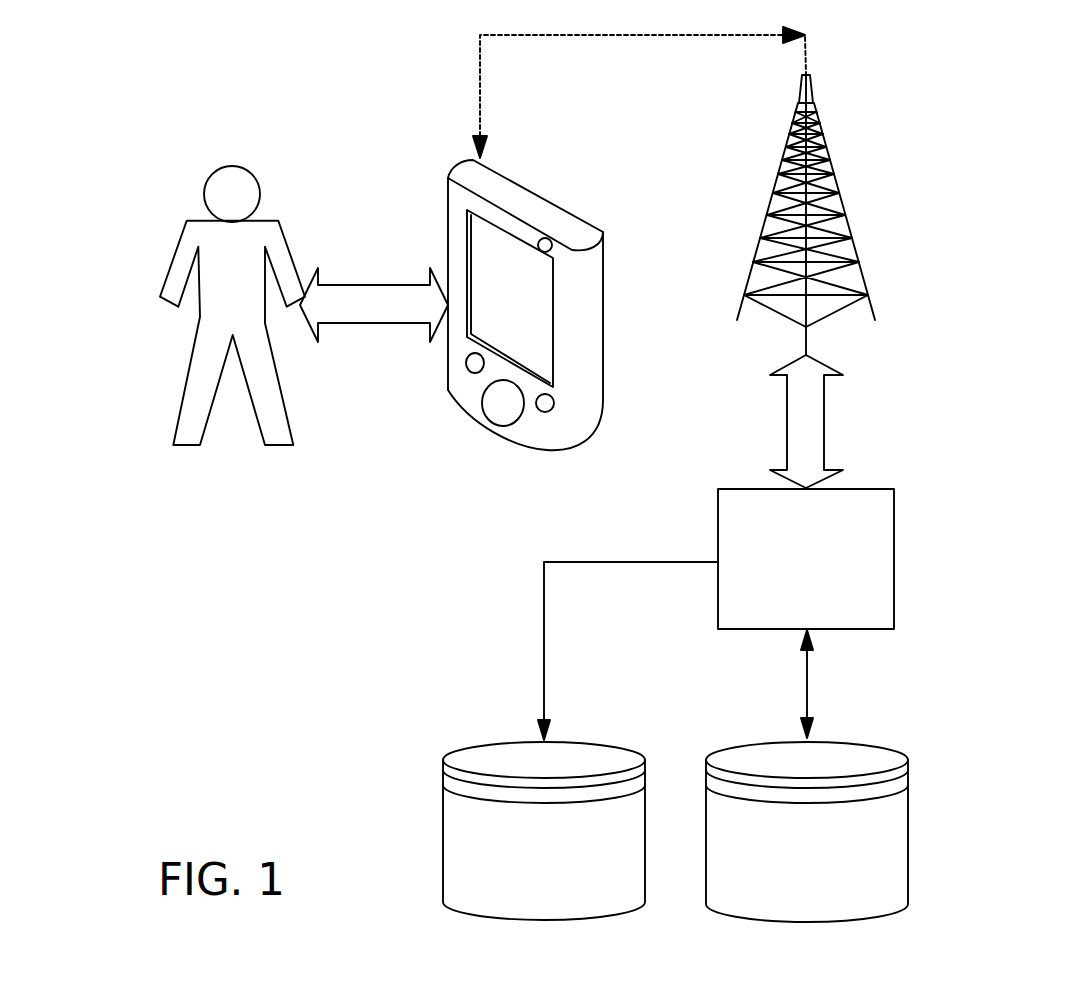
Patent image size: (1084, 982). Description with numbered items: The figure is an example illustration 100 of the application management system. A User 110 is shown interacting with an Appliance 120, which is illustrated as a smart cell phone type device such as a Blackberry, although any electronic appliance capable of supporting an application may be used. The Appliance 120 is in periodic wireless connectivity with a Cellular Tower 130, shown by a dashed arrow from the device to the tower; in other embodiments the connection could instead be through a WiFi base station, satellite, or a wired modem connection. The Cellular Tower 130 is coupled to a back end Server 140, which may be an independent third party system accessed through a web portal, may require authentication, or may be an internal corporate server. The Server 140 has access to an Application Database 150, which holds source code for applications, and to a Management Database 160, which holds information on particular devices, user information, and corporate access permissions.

The illustration of the application management system 100 is at (90, 120).
The user 110 is at (268, 215).
The appliance 120 is at (568, 208).
The cellular tower 130 is at (823, 140).
The server 140 is at (863, 489).
The application database 150 is at (863, 743).
The management database 160 is at (583, 742).